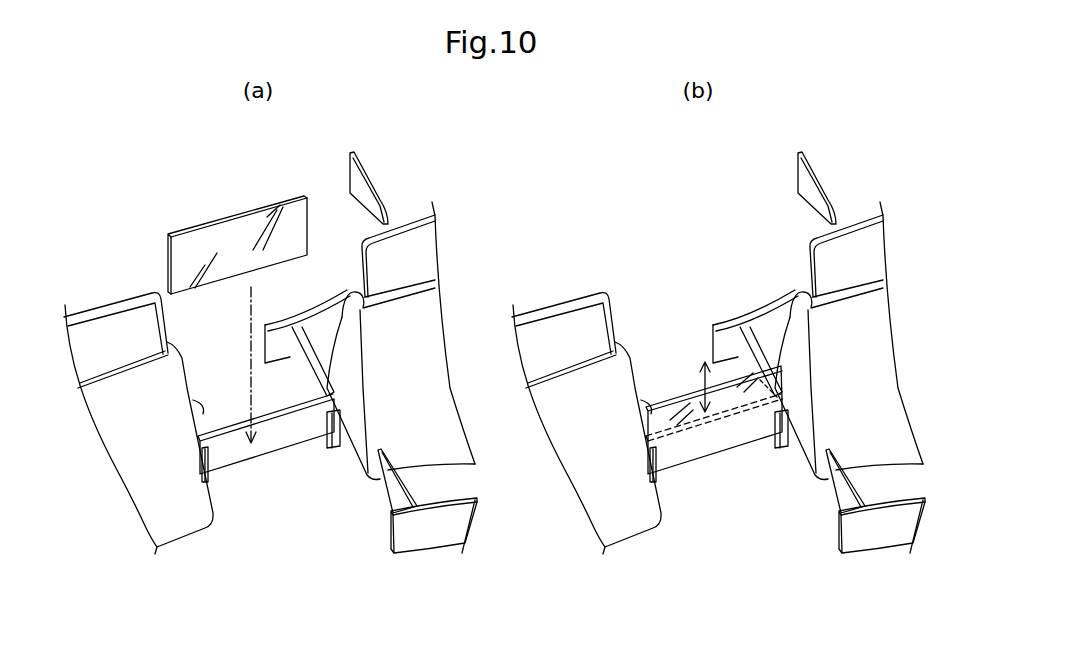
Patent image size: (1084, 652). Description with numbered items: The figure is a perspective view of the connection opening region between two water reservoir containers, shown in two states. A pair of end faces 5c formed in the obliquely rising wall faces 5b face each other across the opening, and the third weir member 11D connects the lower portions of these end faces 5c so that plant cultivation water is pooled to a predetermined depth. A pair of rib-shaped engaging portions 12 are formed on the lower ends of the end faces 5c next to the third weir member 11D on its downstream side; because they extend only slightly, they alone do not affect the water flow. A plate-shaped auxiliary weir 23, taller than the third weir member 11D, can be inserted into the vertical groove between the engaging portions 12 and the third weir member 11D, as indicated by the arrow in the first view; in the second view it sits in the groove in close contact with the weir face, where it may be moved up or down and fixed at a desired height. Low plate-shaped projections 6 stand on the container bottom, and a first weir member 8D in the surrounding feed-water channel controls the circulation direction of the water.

The wall face 5b is at (170, 513).
The end face 5c is at (207, 408).
The plate-shaped projection 6 is at (422, 532).
The first weir member 8D is at (407, 481).
The third weir member 11D is at (227, 445).
The engaging portion 12 is at (208, 460).
The plate-shaped auxiliary weir 23 is at (227, 237).